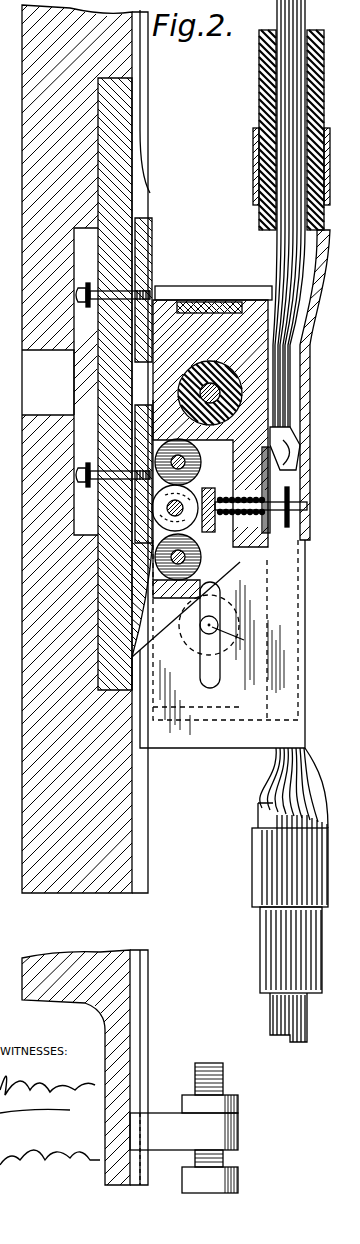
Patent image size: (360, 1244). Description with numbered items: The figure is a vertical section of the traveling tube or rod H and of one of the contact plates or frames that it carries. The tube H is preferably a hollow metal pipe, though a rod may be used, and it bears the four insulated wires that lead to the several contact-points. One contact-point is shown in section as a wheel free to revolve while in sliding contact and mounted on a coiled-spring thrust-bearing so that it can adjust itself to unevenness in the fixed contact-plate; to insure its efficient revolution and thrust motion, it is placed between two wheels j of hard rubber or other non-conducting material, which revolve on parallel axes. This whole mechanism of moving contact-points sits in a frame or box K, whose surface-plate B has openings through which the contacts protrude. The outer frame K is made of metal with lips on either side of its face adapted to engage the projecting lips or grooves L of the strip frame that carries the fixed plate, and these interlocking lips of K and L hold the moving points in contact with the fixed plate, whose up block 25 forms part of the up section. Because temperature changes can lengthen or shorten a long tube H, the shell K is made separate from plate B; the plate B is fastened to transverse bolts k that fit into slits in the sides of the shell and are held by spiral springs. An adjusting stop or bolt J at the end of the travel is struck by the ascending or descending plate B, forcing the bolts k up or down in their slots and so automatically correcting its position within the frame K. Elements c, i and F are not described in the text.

The interlocking lip L is at (148, 790).
The up block 25 is at (130, 514).
The guide slot c is at (161, 193).
The surface-plate B is at (168, 300).
The transverse bolt k is at (245, 392).
The non-conducting wheel j is at (196, 470).
The spring-pressed roller i is at (188, 497).
The frame or box K is at (231, 489).
The traveling tube or rod H is at (359, 85).
The flexible cable F is at (359, 37).
The adjusting stop or bolt J is at (184, 1115).